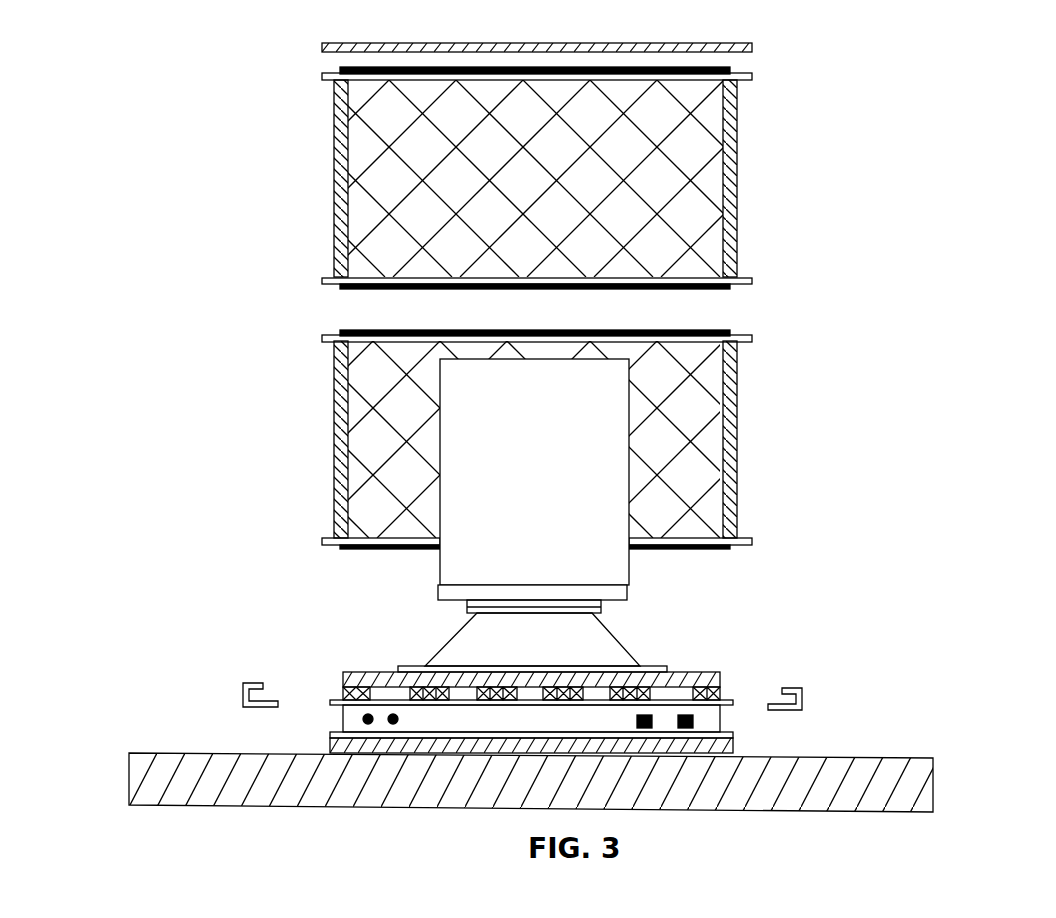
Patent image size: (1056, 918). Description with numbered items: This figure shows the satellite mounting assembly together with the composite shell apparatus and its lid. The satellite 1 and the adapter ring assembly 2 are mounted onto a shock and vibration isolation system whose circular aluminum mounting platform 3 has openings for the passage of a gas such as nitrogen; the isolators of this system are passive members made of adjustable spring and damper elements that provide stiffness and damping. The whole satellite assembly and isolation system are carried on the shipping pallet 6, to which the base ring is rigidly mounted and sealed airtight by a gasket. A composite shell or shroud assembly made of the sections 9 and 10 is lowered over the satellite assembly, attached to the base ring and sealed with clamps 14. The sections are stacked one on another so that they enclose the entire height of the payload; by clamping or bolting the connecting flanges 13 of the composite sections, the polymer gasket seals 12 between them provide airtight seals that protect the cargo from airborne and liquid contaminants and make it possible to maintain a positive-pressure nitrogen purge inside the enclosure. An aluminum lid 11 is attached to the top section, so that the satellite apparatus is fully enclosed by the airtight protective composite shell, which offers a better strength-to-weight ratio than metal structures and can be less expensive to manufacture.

The satellite 1 is at (460, 434).
The adapter ring assembly 2 is at (438, 638).
The mounting platform 3 is at (728, 672).
The shipping pallet 6 is at (948, 772).
The composite shell section 9 is at (738, 445).
The composite shell section 10 is at (743, 131).
The aluminum lid 11 is at (310, 43).
The polymer gasket seals 12 is at (736, 332).
The connecting flanges 13 is at (323, 82).
The clamps 14 is at (237, 687).